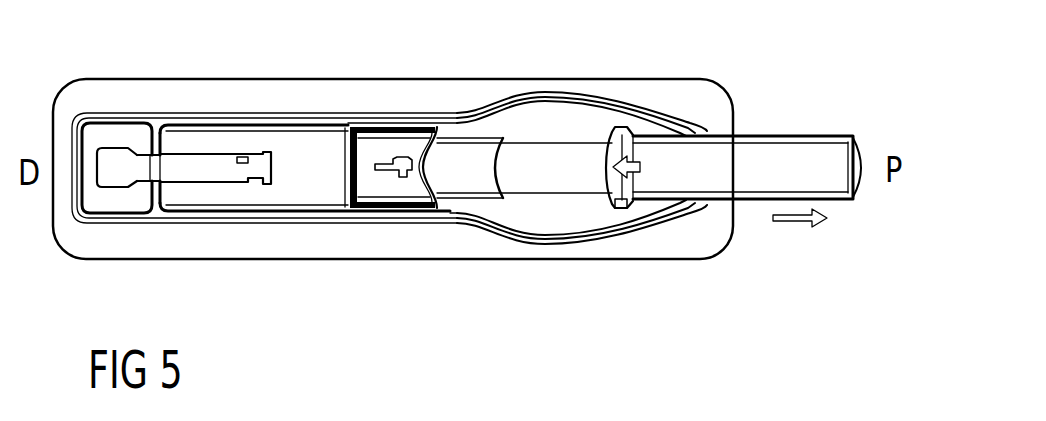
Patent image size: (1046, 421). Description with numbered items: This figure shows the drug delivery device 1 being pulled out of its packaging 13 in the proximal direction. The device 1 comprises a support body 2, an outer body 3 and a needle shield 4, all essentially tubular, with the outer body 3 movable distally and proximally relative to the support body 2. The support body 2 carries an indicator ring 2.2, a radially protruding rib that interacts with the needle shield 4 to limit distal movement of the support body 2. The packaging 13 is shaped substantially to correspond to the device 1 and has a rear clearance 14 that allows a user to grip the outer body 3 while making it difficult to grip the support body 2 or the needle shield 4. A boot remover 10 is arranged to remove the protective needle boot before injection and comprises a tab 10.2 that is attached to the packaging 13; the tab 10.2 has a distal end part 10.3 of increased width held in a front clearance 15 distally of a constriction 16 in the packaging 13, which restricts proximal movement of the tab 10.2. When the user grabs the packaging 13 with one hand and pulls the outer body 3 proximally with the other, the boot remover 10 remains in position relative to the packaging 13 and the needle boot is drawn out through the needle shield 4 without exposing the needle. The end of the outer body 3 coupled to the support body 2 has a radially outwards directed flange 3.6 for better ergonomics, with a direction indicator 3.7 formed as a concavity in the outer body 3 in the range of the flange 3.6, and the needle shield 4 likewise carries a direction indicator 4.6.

The drug delivery device 1 is at (803, 119).
The support body 2 is at (455, 178).
The indicator ring 2.2 is at (494, 150).
The outer body 3 is at (752, 152).
The flange 3.6 is at (620, 207).
The direction indicator 3.7 is at (630, 158).
The needle shield 4 is at (378, 153).
The direction indicator 4.6 is at (407, 178).
The boot remover 10 is at (198, 165).
The tab 10.2 is at (148, 172).
The distal end part 10.3 is at (118, 172).
The packaging 13 is at (257, 237).
The rear clearance 14 is at (552, 220).
The front clearance 15 is at (102, 135).
The constriction 16 is at (155, 125).